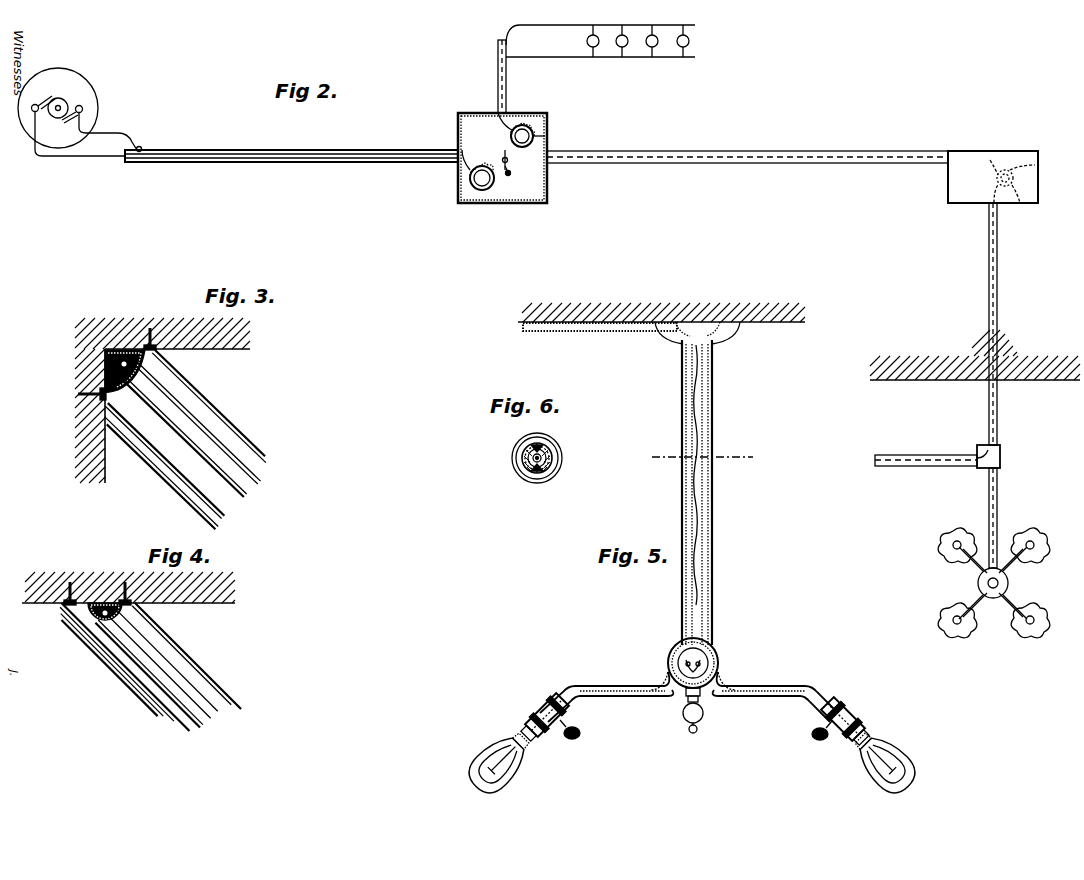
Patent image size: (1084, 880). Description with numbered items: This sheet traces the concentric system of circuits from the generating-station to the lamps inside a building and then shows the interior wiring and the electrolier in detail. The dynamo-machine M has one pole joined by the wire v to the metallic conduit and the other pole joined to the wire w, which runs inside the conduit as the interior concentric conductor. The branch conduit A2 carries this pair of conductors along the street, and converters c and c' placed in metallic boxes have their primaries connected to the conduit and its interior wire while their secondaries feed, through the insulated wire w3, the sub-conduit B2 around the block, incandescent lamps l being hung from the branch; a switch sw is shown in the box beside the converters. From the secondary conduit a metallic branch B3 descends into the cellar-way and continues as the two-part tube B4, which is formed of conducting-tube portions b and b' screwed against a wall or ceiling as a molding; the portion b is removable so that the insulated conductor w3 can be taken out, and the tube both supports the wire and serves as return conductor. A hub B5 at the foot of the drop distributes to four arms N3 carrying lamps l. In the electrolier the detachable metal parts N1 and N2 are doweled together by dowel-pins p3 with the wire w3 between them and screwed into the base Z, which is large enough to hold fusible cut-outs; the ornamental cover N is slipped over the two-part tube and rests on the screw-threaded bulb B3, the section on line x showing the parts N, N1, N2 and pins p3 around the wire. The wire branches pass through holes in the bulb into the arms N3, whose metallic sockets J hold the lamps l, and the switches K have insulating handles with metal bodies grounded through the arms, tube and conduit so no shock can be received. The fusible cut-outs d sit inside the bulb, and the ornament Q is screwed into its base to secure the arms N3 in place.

In FIG. 2, the dynamo-machine M is at (90, 85).
In FIG. 2, the wire v is at (110, 132).
In FIG. 2, the wire w is at (1072, 172).
In FIG. 2, the branch conduit A2 is at (254, 150).
In FIG. 2, the sub-conduit B2 is at (506, 100).
In FIG. 2, the incandescent lamp l is at (623, 41).
In FIG. 5, the incandescent lamp l is at (518, 760).
In FIG. 2, the converter c is at (748, 158).
In FIG. 2, the converter c' is at (485, 174).
In FIG. 2, the switch sw is at (515, 164).
In FIG. 2, the insulated wire w3 is at (989, 277).
In FIG. 3, the insulated wire w3 is at (117, 364).
In FIG. 4, the insulated wire w3 is at (92, 618).
In FIG. 5, the insulated wire w3 is at (666, 682).
In FIG. 6, the insulated wire w3 is at (524, 455).
In FIG. 2, the branch / bulb B3 is at (998, 407).
In FIG. 5, the branch / bulb B3 is at (716, 660).
In FIG. 2, the two-part metallic tube B4 is at (997, 516).
In FIG. 3, the two-part metallic tube B4 is at (190, 392).
In FIG. 4, the two-part metallic tube B4 is at (170, 645).
In FIG. 5, the two-part metallic tube B4 is at (612, 331).
In FIG. 2, the distributing hub B5 is at (1009, 582).
In FIG. 2, the arm N3 is at (968, 560).
In FIG. 5, the arm N3 is at (610, 686).
In FIG. 3, the conducting-tube part b is at (239, 424).
In FIG. 4, the conducting-tube part b is at (215, 670).
In FIG. 3, the conducting-tube part b' is at (162, 466).
In FIG. 4, the conducting-tube part b' is at (122, 671).
In FIG. 5, the support or base Z is at (732, 334).
In FIG. 5, the ornamental cover N is at (682, 393).
In FIG. 6, the ornamental cover N is at (553, 442).
In FIG. 5, the section line x is at (700, 456).
In FIG. 5, the fusible cut-out d is at (693, 673).
In FIG. 5, the metallic socket J is at (542, 710).
In FIG. 5, the switch K is at (580, 736).
In FIG. 5, the ornament Q is at (702, 714).
In FIG. 6, the detachable tube part N2 is at (524, 468).
In FIG. 6, the detachable tube part N1 is at (550, 468).
In FIG. 6, the dowel-pin p3 is at (538, 438).